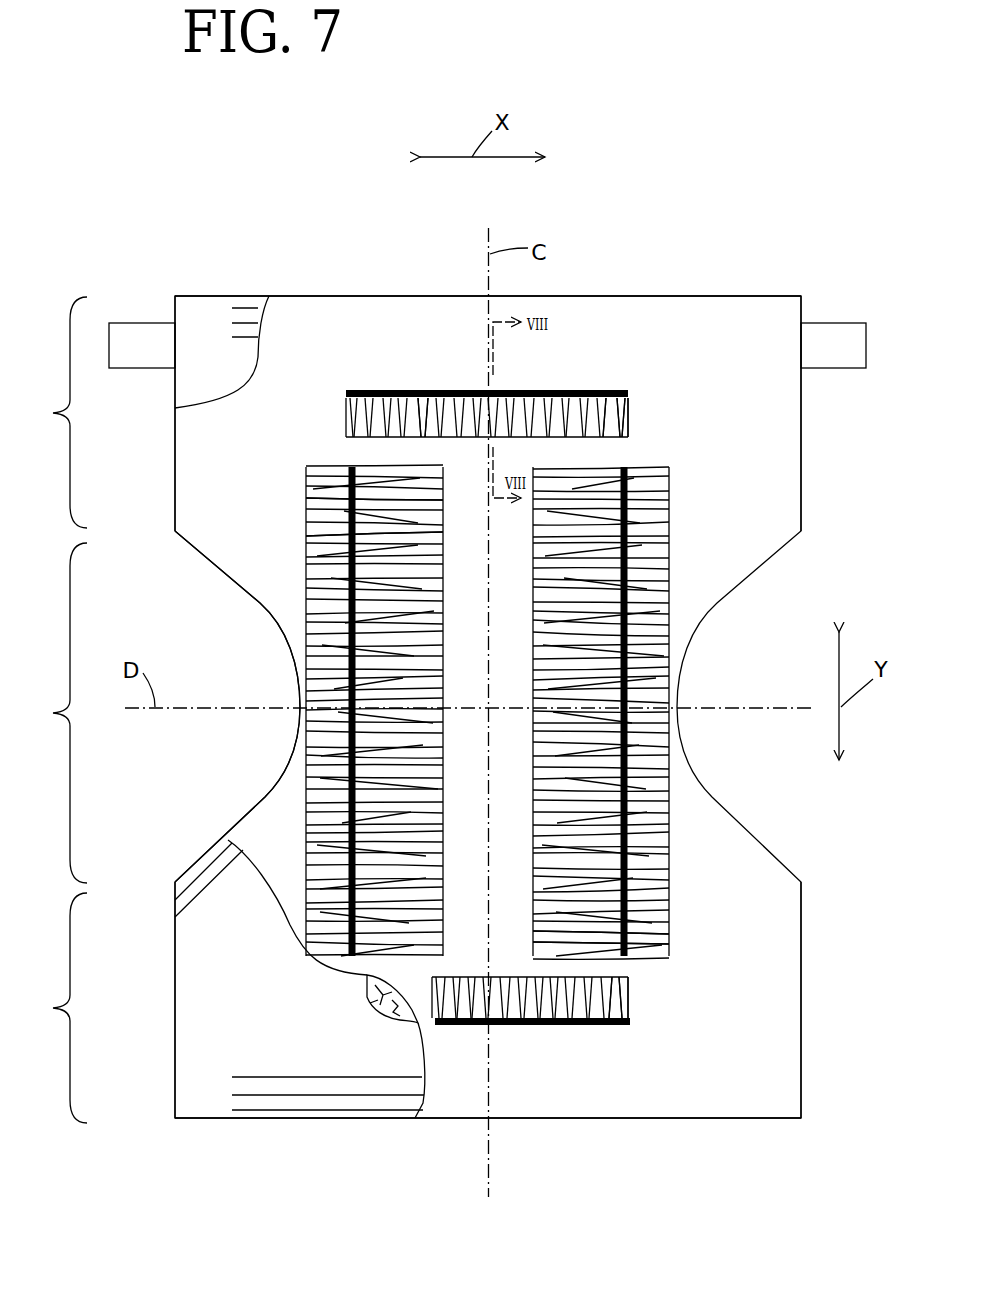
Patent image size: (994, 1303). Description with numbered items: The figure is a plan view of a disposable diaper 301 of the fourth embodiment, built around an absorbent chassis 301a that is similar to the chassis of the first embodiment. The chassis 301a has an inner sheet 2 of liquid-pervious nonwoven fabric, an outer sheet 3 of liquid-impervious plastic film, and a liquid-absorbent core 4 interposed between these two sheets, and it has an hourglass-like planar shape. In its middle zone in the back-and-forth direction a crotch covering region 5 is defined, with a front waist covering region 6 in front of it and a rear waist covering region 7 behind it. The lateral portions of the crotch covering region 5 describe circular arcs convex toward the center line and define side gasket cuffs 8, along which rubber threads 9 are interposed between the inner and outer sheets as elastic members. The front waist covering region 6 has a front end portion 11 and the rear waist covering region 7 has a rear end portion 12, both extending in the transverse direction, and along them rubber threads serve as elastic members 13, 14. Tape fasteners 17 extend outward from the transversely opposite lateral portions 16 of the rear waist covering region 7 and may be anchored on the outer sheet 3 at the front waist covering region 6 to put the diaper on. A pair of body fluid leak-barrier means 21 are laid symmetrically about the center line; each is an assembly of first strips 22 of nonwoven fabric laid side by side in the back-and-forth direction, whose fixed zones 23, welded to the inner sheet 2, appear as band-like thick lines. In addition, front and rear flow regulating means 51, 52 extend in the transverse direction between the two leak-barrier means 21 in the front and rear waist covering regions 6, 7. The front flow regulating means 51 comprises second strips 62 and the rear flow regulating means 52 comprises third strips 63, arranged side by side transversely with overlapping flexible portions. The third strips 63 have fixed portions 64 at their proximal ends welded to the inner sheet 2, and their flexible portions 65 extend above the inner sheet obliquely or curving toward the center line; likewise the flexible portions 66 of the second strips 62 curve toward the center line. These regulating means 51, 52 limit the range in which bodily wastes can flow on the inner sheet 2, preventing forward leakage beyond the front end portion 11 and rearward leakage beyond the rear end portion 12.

The diaper 301 is at (682, 233).
The absorbent chassis 301a is at (808, 918).
The inner sheet 2 is at (447, 1102).
The outer sheet 3 is at (195, 1028).
The liquid-absorbent core 4 is at (377, 1008).
The crotch covering region 5 is at (56, 713).
The front waist covering region 6 is at (56, 1008).
The rear waist covering region 7 is at (56, 412).
The side gasket cuffs 8 is at (257, 568).
The rubber threads 9 is at (205, 882).
The front end portion 11 is at (543, 1097).
The rear end portion 12 is at (390, 323).
The elastic members 13 is at (291, 1097).
The elastic members 14 is at (238, 307).
The lateral portions of the rear waist covering region 16 is at (195, 468).
The tape fasteners 17 is at (142, 333).
The body fluid leak-barrier means 21 is at (293, 435).
The first strips 22 is at (437, 532).
The fixed zones 23 is at (355, 465).
The front flow regulating means 51 is at (610, 1033).
The rear flow regulating means 52 is at (385, 377).
The second strips 62 is at (565, 1027).
The third strips 63 is at (586, 391).
The fixed portions 64 is at (423, 391).
The flexible portions 65 is at (607, 423).
The flexible portions 66 is at (622, 997).